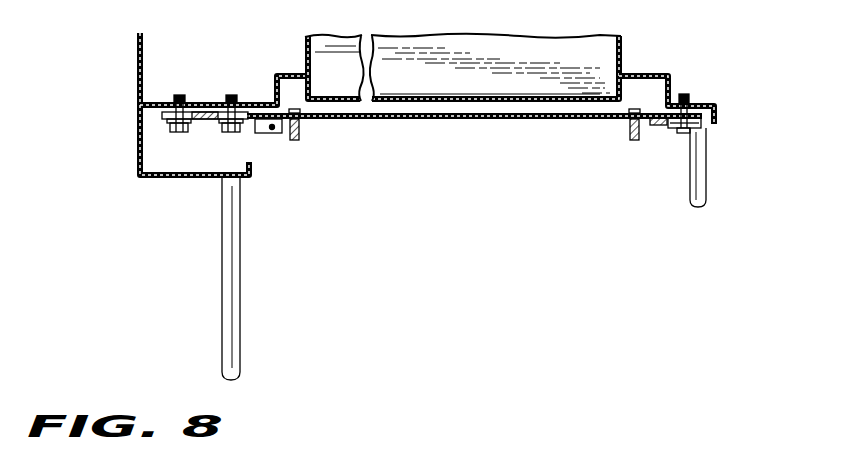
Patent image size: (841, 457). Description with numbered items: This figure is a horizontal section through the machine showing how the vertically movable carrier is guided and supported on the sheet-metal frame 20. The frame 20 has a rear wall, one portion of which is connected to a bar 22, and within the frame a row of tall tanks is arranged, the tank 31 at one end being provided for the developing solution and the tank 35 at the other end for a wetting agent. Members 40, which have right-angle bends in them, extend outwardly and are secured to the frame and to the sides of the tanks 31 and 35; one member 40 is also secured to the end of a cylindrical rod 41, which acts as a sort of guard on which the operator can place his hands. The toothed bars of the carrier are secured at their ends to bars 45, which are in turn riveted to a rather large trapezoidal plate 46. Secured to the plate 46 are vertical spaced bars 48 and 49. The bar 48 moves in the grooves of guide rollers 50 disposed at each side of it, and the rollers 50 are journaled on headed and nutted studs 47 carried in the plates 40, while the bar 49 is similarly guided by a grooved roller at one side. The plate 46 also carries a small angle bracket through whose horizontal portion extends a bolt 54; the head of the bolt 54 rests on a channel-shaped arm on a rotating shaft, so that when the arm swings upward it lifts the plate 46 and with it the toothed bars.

The frame 20 is at (132, 165).
The bar 22 is at (240, 243).
The tank 31 is at (330, 42).
The tank 35 is at (423, 97).
The member 40 is at (254, 101).
The cylindrical rod 41 is at (702, 172).
The bar 45 is at (299, 133).
The trapezoidal plate 46 is at (393, 119).
The stud 47 is at (232, 94).
The bar 48 is at (211, 122).
The bar 49 is at (660, 125).
The grooved guide roller 50 is at (178, 134).
The bolt 54 is at (270, 128).